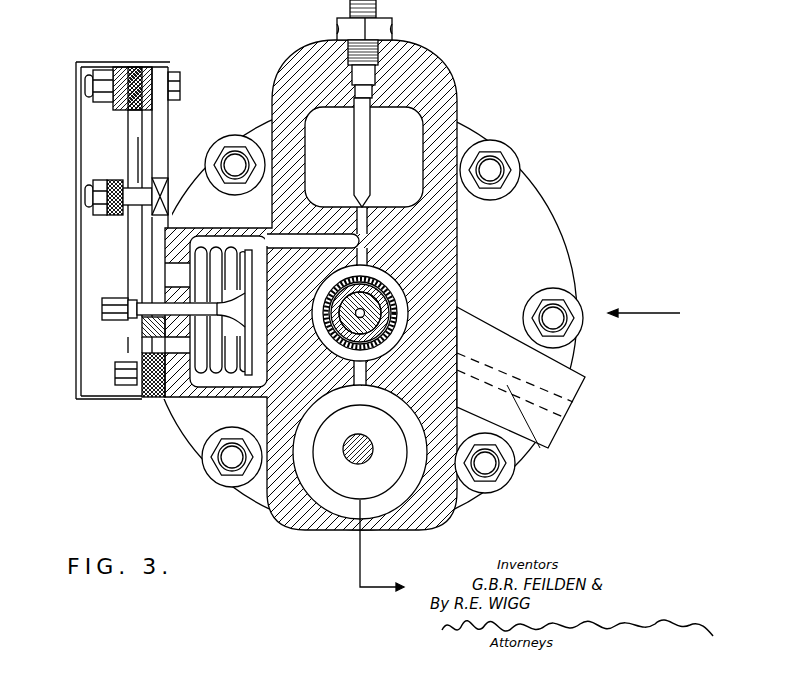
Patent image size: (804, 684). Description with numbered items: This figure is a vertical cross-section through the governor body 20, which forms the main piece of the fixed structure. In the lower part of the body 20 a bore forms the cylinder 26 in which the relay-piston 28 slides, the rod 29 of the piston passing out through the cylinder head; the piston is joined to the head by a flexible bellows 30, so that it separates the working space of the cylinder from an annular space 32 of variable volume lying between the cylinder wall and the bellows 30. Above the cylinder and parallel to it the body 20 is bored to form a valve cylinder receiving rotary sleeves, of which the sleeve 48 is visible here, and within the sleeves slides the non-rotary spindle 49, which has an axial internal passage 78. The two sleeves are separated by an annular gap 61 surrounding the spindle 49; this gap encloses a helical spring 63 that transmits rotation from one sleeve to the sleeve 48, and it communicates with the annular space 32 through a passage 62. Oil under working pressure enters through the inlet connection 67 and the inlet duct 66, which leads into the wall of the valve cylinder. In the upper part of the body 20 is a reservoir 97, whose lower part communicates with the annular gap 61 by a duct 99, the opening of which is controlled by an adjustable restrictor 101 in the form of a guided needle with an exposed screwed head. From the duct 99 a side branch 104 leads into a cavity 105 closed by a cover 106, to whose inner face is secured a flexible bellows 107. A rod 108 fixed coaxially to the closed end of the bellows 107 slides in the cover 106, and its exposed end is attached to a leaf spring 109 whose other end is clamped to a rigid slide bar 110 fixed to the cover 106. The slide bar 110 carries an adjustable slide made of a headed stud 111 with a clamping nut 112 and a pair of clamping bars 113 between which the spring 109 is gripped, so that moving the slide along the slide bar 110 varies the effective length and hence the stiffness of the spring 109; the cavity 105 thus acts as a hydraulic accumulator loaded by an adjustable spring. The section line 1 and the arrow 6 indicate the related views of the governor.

The section line 1 is at (382, 555).
The viewing direction arrow 6 is at (654, 315).
The body 20 is at (427, 277).
The cylinder 26 is at (287, 473).
The relay-piston 28 is at (360, 474).
The rod 29 is at (350, 457).
The flexible bellows 30 is at (397, 482).
The annular space 32 is at (385, 503).
The rotary sleeve 48 is at (403, 303).
The spindle 49 is at (388, 317).
The annular gap 61 is at (367, 273).
The passage 62 is at (356, 372).
The helical spring 63 is at (402, 340).
The inlet duct 66 is at (533, 429).
The inlet connection 67 is at (563, 413).
The axial internal passage 78 is at (360, 313).
The reservoir 97 is at (400, 150).
The duct 99 is at (367, 253).
The adjustable restrictor 101 is at (368, 175).
The side branch 104 is at (315, 248).
The cavity 105 is at (227, 378).
The cover 106 is at (170, 240).
The flexible bellows 107 is at (232, 257).
The rod 108 is at (160, 390).
The leaf spring 109 is at (95, 203).
The slide bar 110 is at (162, 83).
The headed stud 111 is at (158, 180).
The clamping nut 112 is at (96, 183).
The clamping bars 113 is at (122, 70).